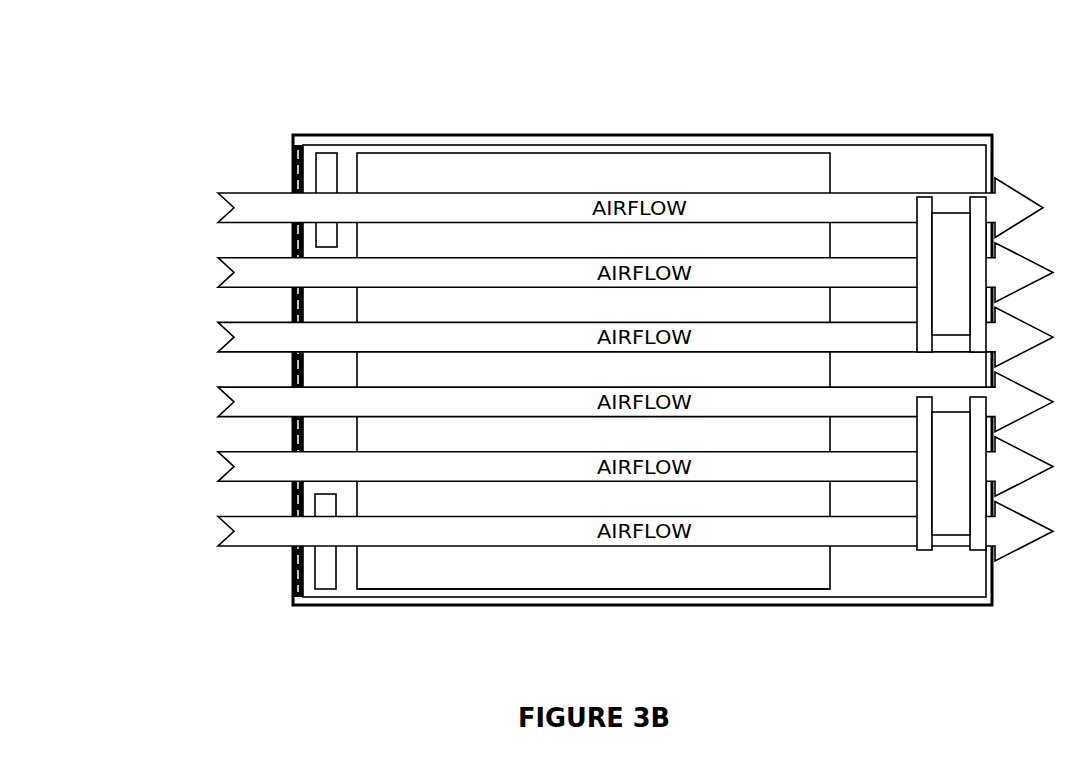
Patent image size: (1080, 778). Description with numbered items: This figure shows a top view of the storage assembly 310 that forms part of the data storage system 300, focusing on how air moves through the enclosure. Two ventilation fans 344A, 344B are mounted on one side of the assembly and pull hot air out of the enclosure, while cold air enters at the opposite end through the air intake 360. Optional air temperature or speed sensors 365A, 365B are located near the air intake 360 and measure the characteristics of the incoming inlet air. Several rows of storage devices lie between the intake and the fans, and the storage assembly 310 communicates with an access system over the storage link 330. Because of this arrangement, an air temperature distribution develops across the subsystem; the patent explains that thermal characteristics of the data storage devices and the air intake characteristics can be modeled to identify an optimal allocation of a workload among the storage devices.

The data storage system 300 is at (190, 39).
The storage assembly 310 is at (503, 136).
The storage link 330 is at (611, 188).
The fan 344A is at (958, 238).
The fan 344B is at (958, 435).
The air intake 360 is at (291, 368).
The air temperature or speed sensor 365A is at (330, 162).
The air temperature or speed sensor 365B is at (327, 578).